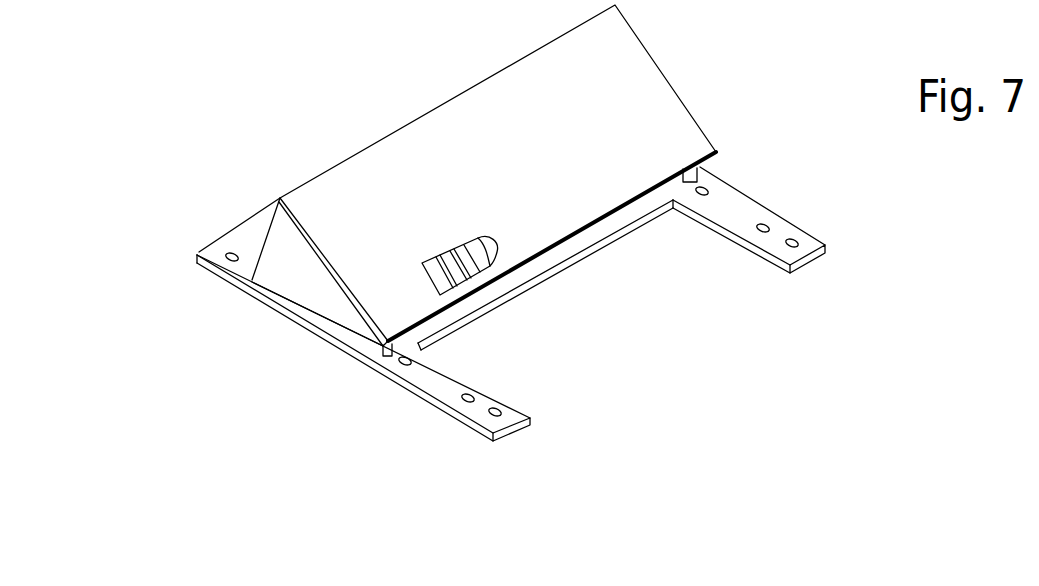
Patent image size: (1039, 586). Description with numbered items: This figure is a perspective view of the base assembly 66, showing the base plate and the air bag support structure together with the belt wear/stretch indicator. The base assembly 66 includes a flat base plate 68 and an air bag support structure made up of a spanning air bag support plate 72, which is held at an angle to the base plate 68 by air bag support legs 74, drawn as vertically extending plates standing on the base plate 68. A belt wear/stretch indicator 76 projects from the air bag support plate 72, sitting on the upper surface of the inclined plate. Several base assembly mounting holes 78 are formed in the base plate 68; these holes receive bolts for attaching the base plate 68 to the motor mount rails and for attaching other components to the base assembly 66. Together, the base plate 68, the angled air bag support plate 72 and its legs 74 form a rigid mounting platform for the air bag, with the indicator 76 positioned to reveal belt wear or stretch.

The base assembly 66 is at (298, 121).
The base plate 68 is at (428, 385).
The air bag support plate 72 is at (492, 130).
The air bag support legs 74 is at (282, 260).
The belt wear/stretch indicator 76 is at (478, 263).
The base assembly mounting holes 78 is at (223, 251).